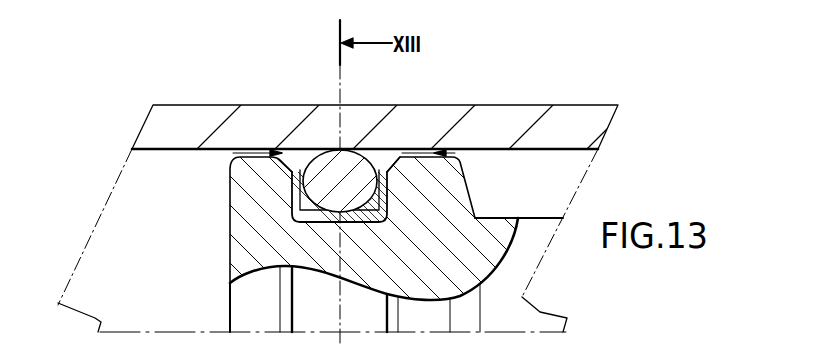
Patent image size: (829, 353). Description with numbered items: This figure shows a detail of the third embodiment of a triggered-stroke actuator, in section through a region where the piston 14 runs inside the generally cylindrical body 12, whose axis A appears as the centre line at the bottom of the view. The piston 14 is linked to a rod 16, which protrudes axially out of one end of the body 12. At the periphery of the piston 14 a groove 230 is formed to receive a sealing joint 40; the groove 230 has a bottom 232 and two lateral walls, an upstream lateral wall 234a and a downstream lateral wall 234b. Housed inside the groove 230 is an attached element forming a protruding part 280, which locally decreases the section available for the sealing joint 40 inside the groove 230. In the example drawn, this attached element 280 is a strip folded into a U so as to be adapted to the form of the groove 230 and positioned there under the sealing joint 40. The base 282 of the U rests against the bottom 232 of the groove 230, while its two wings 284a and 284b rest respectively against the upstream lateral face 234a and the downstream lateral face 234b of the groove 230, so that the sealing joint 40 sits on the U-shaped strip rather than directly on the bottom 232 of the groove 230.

The body 12 is at (578, 115).
The piston 14 is at (258, 174).
The rod 16 is at (527, 268).
The sealing joint 40 is at (337, 167).
The groove 230 is at (375, 153).
The bottom of the groove 232 is at (312, 268).
The upstream lateral wall 234a is at (289, 222).
The downstream lateral wall 234b is at (392, 205).
The protruding part 280 is at (240, 234).
The base of the U 282 is at (355, 225).
The wing 284a is at (297, 197).
The wing 284b is at (388, 166).
The axis A is at (150, 330).